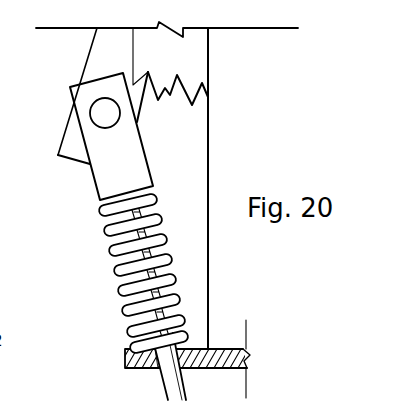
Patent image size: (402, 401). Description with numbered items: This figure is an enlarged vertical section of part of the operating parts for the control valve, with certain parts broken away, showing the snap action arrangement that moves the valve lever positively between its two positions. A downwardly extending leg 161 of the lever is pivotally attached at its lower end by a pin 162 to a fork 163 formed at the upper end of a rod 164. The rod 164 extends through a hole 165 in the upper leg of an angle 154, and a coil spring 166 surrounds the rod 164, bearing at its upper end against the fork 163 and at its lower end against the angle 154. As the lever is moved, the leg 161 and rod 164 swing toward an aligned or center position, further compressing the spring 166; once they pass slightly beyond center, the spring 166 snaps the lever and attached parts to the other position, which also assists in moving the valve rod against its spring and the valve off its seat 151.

The seat 151 is at (198, 60).
The angle 154 is at (222, 350).
The leg 161 is at (99, 55).
The pin 162 is at (101, 113).
The fork 163 is at (138, 153).
The rod 164 is at (178, 385).
The hole 165 is at (157, 368).
The coil spring 166 is at (117, 277).